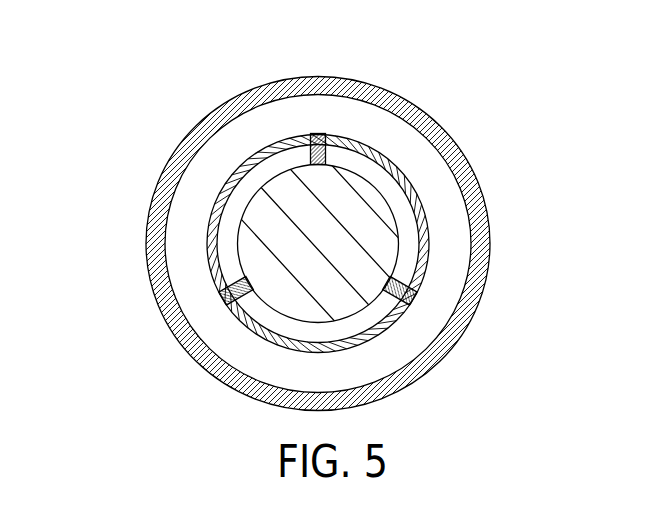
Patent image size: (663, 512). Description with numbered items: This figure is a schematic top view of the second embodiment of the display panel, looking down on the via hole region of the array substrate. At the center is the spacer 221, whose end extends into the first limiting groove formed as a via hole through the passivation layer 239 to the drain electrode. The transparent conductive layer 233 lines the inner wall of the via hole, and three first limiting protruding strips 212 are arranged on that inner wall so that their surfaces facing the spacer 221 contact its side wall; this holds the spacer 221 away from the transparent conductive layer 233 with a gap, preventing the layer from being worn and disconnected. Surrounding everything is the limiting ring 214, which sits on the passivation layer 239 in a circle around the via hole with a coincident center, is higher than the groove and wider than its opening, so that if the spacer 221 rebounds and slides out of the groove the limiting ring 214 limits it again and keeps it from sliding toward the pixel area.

The limiting ring 214 is at (222, 110).
The passivation layer 239 is at (430, 168).
The transparent conductive layer 233 is at (352, 140).
The spacer 221 is at (268, 218).
The first limiting protruding strip 212 is at (313, 133).